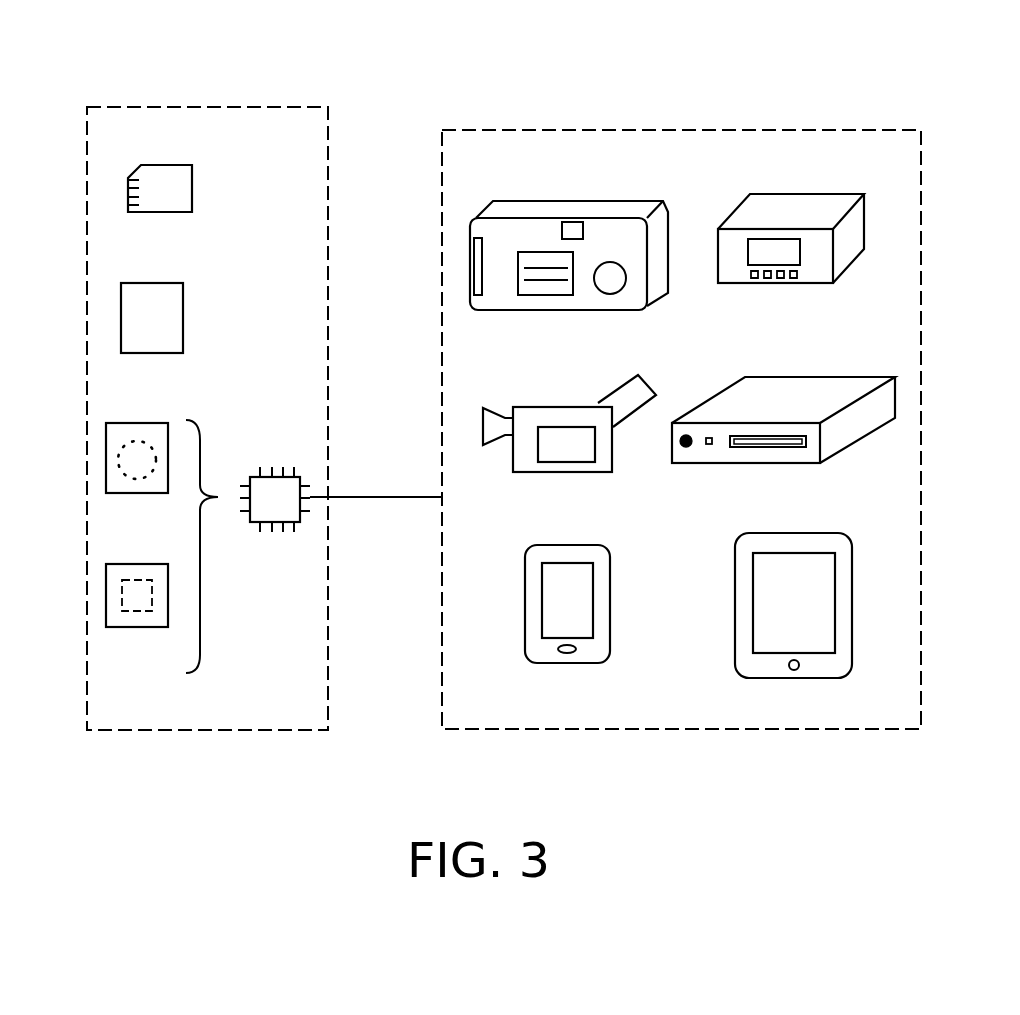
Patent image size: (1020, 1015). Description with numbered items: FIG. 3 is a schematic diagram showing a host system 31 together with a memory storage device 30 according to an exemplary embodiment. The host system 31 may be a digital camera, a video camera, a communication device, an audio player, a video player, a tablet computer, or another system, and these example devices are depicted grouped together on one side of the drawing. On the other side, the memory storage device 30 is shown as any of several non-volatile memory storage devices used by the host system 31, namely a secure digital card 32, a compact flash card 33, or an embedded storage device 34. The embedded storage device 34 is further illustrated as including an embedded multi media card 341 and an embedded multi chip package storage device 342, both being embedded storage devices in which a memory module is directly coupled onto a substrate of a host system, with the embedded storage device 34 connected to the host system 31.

The memory storage device 30 is at (198, 107).
The host system 31 is at (605, 130).
The secure digital (SD) card 32 is at (128, 192).
The compact flash (CF) card 33 is at (121, 320).
The embedded storage device 34 is at (274, 467).
The embedded multi media card (eMMC) 341 is at (106, 460).
The embedded multi chip package (eMCP) storage device 342 is at (106, 597).